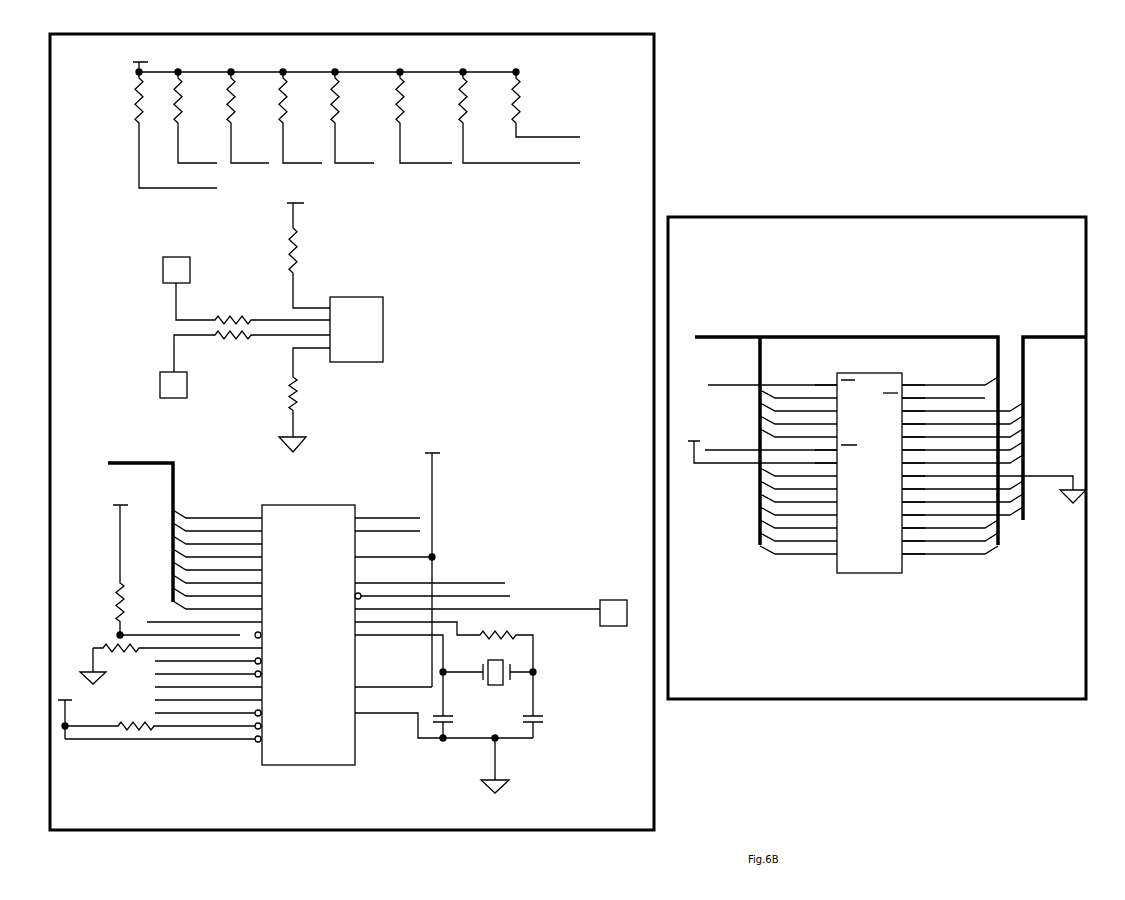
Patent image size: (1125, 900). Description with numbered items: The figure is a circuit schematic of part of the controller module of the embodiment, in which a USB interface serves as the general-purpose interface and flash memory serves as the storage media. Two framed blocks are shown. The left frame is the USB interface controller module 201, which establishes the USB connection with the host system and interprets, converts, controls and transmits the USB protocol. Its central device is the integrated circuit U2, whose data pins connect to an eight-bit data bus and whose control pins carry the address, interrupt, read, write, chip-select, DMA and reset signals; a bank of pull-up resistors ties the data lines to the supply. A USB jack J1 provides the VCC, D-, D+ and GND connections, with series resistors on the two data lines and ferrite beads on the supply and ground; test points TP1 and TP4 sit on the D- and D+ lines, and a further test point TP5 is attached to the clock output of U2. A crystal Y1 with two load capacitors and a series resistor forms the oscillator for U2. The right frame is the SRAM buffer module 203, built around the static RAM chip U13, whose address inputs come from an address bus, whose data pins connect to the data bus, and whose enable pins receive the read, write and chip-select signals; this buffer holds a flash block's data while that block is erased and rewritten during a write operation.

The USB interface controller module 201 is at (346, 432).
The SRAM buffer module 203 is at (877, 458).
The USB interface IC PDIUSBD12PW U2 is at (306, 637).
The SRAM HY62256A U13 is at (868, 475).
The USB jack J1 is at (350, 331).
The crystal 6MHz Y1 is at (488, 675).
The test point TP1 is at (176, 262).
The test point TP4 is at (184, 385).
The test point TP5 is at (613, 605).